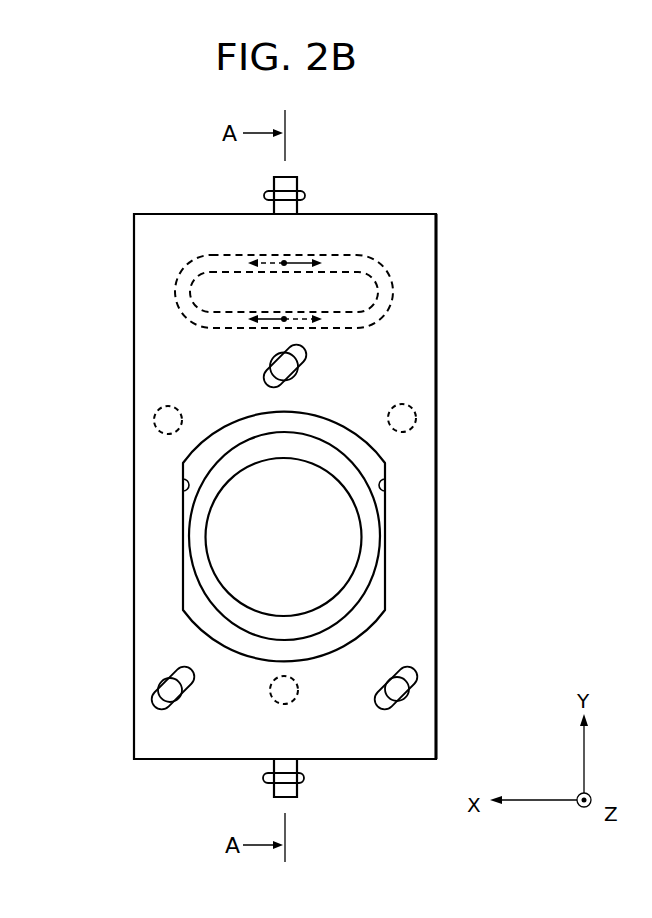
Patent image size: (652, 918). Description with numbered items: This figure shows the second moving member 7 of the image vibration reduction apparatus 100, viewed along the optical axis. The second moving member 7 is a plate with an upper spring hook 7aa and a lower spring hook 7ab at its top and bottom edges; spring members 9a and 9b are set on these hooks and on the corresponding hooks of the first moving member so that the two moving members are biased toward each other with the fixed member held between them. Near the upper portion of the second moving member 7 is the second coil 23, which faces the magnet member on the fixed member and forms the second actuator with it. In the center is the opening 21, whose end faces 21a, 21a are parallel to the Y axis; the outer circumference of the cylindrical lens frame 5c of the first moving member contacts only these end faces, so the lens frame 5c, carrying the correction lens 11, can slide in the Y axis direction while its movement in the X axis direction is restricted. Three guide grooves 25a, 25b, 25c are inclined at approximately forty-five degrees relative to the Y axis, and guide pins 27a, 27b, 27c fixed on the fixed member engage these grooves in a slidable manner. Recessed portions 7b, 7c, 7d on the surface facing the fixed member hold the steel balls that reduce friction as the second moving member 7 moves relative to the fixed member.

The image vibration reduction apparatus 100 is at (432, 177).
The second moving member 7 is at (422, 322).
The upper spring hook of the second moving member 7aa is at (292, 182).
The lower spring hook of the second moving member 7ab is at (290, 788).
The spring member 9a is at (307, 195).
The spring member 9b is at (306, 778).
The second coil 23 is at (198, 258).
The guide groove 25a is at (305, 363).
The guide groove 25b is at (152, 695).
The guide groove 25c is at (400, 706).
The guide pin 27a is at (272, 364).
The guide pin 27b is at (166, 684).
The guide pin 27c is at (395, 685).
The recessed portion 7b is at (294, 700).
The recessed portion 7c is at (157, 415).
The recessed portion 7d is at (410, 412).
The opening 21 is at (363, 442).
The end face of the opening portion 21a is at (183, 487).
The lens frame 5c is at (373, 545).
The correction lens 11 is at (228, 552).